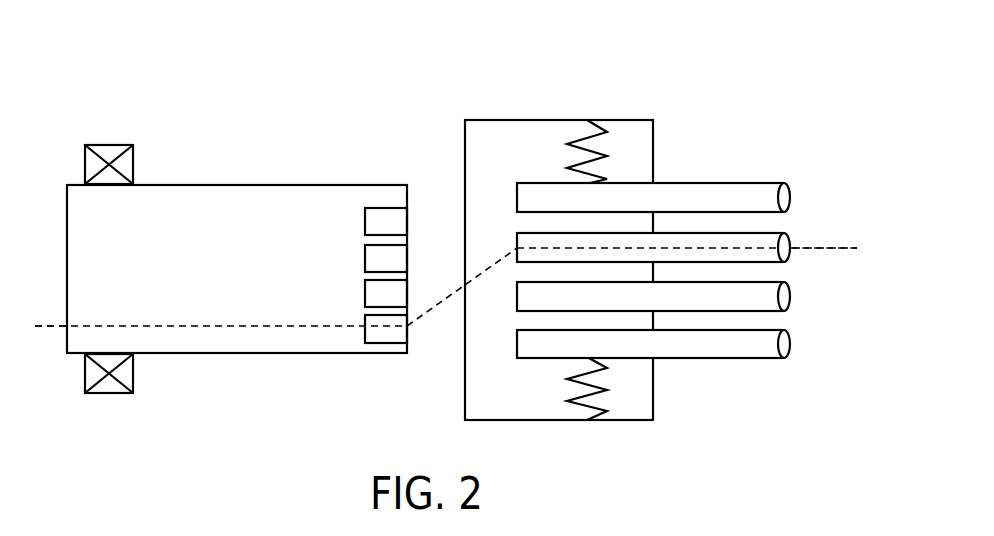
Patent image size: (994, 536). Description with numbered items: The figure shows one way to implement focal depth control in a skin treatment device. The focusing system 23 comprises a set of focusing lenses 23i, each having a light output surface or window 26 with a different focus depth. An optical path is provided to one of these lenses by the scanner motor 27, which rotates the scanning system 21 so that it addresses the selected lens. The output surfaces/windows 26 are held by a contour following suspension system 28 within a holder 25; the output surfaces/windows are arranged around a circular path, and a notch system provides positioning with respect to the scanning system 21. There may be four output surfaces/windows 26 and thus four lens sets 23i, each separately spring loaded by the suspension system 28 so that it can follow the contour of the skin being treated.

The scanning system 21 is at (243, 185).
The scanner motor 27 is at (117, 145).
The focusing system 23 is at (620, 62).
The focusing lenses 23i is at (736, 183).
The holder 25 is at (463, 123).
The light output surface/windows 26 is at (790, 188).
The contour following suspension system 28 is at (577, 142).